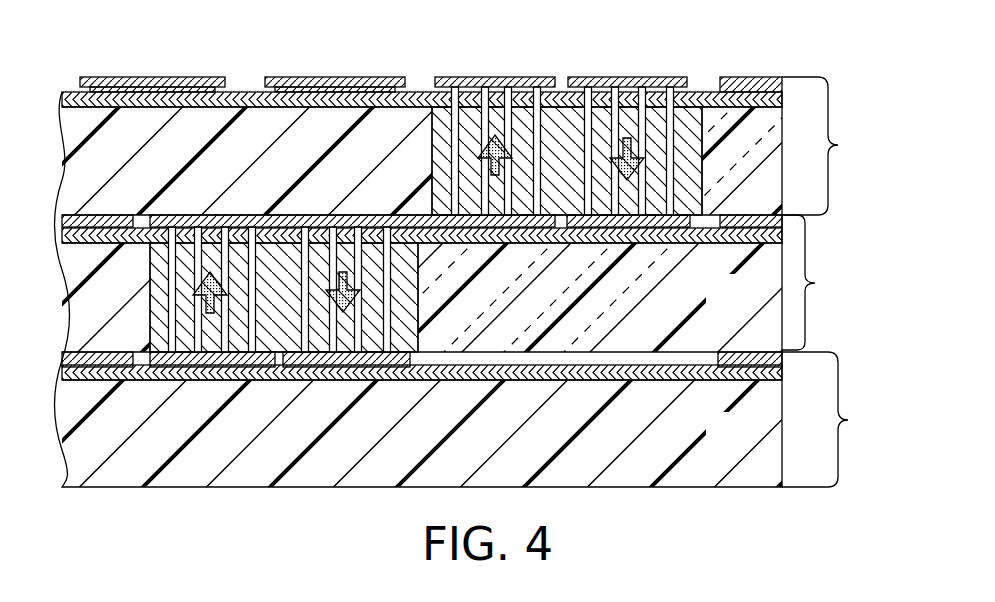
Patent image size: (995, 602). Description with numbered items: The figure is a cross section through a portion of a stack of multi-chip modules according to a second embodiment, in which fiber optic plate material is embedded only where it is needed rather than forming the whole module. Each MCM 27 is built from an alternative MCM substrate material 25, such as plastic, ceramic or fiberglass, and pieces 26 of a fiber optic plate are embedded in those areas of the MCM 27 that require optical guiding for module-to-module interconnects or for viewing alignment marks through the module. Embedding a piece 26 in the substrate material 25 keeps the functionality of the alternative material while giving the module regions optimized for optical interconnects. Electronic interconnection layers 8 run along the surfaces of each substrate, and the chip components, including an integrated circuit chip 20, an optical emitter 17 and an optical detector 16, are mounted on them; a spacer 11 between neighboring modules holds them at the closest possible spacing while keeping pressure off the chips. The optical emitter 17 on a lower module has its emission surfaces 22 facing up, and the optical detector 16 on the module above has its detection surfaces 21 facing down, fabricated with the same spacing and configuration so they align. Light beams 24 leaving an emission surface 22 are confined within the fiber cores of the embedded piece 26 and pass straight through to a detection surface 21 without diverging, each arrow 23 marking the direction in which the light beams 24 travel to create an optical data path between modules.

The electronic interconnection layers 8 is at (782, 100).
The spacer 11 is at (757, 77).
The optical detector 16 is at (496, 80).
The optical emitter 17 is at (626, 88).
The integrated circuit chip 20 is at (148, 77).
The detection surfaces 21 is at (484, 80).
The emission surfaces 22 is at (638, 86).
The arrow 23 is at (207, 290).
The light beams 24 is at (684, 132).
The alternative MCM substrate material 25 is at (740, 303).
The pieces of FOP 26 is at (702, 152).
The MCM 27 is at (841, 145).